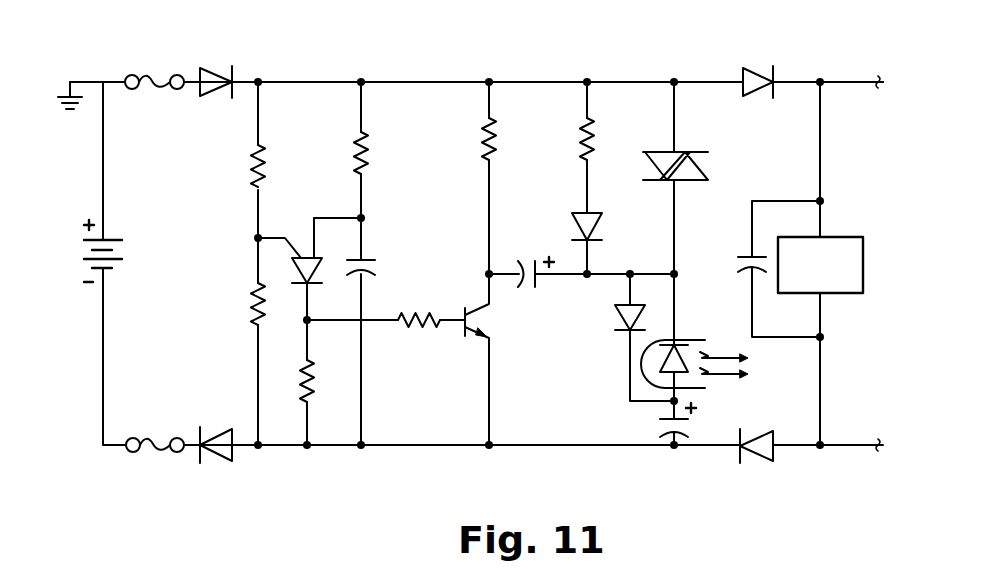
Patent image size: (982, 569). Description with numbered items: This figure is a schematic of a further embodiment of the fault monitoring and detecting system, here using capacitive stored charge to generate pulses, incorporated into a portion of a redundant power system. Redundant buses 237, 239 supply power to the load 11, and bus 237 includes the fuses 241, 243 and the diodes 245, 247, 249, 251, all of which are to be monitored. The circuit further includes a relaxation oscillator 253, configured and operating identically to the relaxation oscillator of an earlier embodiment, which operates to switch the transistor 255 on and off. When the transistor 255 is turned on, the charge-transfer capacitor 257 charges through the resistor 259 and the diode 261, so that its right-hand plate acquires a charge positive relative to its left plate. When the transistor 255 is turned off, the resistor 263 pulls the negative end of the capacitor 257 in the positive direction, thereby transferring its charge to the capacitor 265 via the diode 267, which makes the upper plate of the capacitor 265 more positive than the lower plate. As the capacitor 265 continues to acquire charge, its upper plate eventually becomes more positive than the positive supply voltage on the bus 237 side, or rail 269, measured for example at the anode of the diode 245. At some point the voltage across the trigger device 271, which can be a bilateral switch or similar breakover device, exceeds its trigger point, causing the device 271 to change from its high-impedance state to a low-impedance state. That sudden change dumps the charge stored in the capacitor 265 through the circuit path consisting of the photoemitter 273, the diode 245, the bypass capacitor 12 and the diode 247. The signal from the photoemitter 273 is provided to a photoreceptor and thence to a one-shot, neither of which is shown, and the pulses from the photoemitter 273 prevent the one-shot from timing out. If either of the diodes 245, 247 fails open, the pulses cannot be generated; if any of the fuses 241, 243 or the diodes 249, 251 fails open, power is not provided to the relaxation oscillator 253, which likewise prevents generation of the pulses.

The load 11 is at (854, 238).
The bypass capacitor 12 is at (746, 272).
The bus 237 is at (798, 82).
The bus 239 is at (867, 84).
The fuse 241 is at (166, 82).
The fuse 243 is at (151, 442).
The diode 245 is at (751, 70).
The diode 247 is at (754, 440).
The diode 249 is at (205, 68).
The diode 251 is at (216, 438).
The relaxation oscillator 253 is at (316, 164).
The transistor 255 is at (482, 332).
The charge-transfer capacitor 257 is at (519, 266).
The resistor 259 is at (591, 144).
The diode 261 is at (606, 237).
The resistor 263 is at (496, 144).
The capacitor 265 is at (666, 420).
The diode 267 is at (617, 329).
The rail 269 is at (691, 82).
The trigger device 271 is at (705, 176).
The photoemitter 273 is at (678, 345).